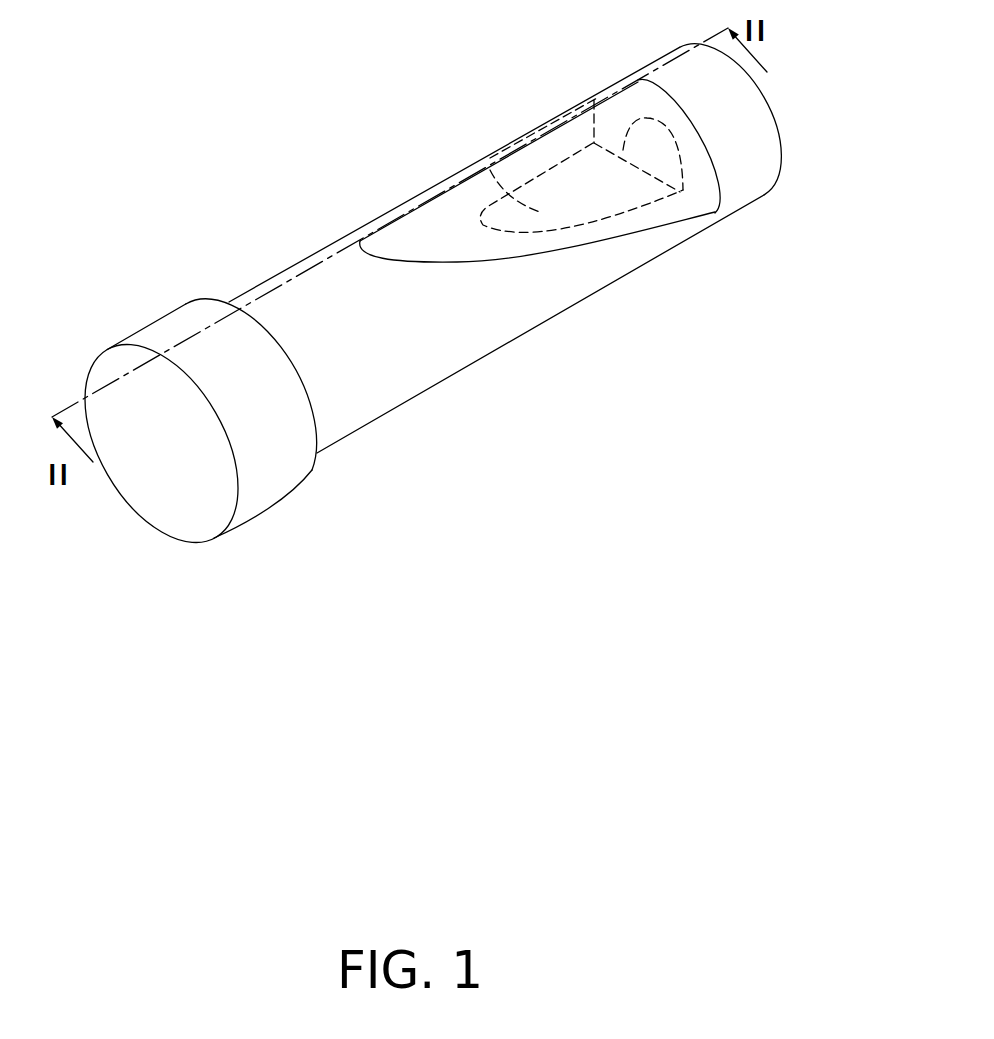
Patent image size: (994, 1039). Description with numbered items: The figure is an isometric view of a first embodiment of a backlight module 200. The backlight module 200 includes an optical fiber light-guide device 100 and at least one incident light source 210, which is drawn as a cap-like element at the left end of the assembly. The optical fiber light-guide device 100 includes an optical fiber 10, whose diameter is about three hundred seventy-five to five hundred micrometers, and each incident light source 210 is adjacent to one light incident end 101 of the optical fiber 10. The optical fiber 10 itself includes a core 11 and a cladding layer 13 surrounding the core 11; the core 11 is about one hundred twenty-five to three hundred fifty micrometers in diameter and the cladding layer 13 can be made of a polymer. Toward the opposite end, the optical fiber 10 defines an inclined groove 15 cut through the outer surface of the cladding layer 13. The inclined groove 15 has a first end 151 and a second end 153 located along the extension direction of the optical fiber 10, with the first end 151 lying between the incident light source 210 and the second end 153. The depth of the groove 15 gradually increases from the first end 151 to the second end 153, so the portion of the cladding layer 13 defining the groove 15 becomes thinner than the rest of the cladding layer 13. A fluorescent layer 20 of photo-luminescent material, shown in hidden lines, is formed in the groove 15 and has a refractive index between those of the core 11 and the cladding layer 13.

The optical fiber 10 is at (508, 87).
The core 11 is at (485, 150).
The cladding layer 13 is at (292, 307).
The inclined groove 15 is at (457, 262).
The fluorescent layer 20 is at (580, 130).
The optical fiber light-guide device 100 is at (352, 467).
The light incident end 101 is at (228, 303).
The first end 151 is at (360, 248).
The second end 153 is at (691, 118).
The backlight module 200 is at (277, 622).
The incident light source 210 is at (260, 485).